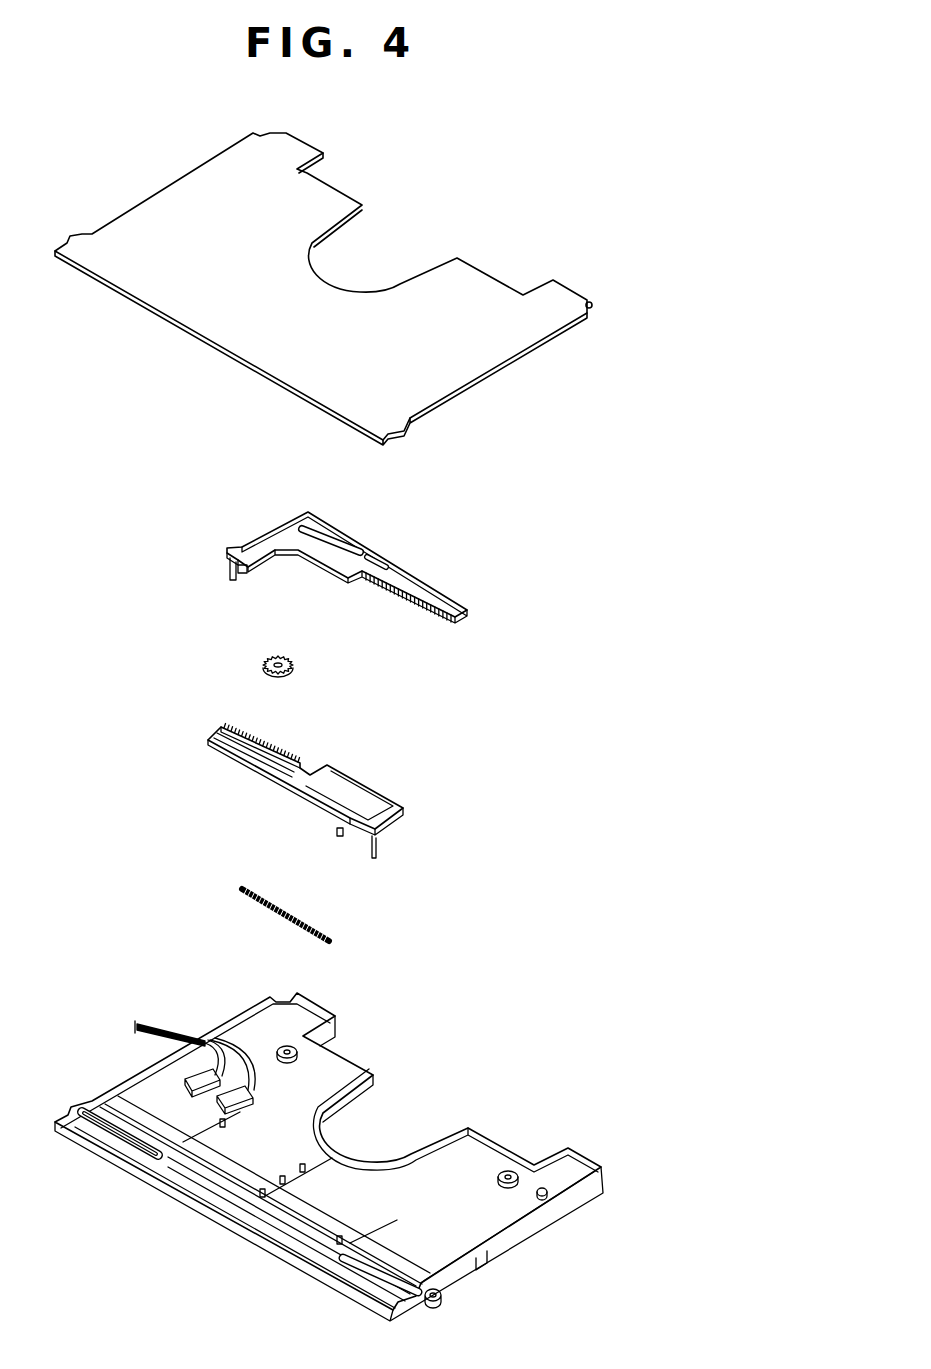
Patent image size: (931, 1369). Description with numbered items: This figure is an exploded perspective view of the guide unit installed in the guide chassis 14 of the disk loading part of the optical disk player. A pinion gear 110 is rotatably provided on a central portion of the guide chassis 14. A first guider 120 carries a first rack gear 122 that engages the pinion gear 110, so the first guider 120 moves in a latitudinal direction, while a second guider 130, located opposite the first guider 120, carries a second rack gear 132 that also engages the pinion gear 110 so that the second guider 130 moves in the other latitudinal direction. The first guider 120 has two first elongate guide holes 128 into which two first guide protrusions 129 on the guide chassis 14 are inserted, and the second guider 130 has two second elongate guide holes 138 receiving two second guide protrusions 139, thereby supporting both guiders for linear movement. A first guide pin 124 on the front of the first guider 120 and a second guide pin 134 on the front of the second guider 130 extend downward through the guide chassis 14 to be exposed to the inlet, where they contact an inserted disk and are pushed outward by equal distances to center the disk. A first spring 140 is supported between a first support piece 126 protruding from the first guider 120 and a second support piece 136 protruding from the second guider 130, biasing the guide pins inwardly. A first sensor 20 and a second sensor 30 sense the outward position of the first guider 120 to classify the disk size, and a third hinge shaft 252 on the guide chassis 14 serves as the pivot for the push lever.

The guide chassis 14 is at (483, 1218).
The first sensor 20 is at (232, 1092).
The second sensor 30 is at (190, 1072).
The pinion gear 110 is at (267, 662).
The first guider 120 is at (290, 541).
The first rack gear 122 is at (428, 613).
The first guide pin 124 is at (228, 568).
The first support piece 126 is at (243, 574).
The first elongate guide holes 128 is at (340, 538).
The first guide protrusions 129 is at (203, 1113).
The second guider 130 is at (353, 795).
The second rack gear 132 is at (283, 752).
The second guide pin 134 is at (380, 850).
The second support piece 136 is at (337, 830).
The second elongate guide holes 138 is at (367, 812).
The second guide protrusions 139 is at (333, 1233).
The first spring 140 is at (303, 917).
The third hinge shaft 252 is at (545, 1190).